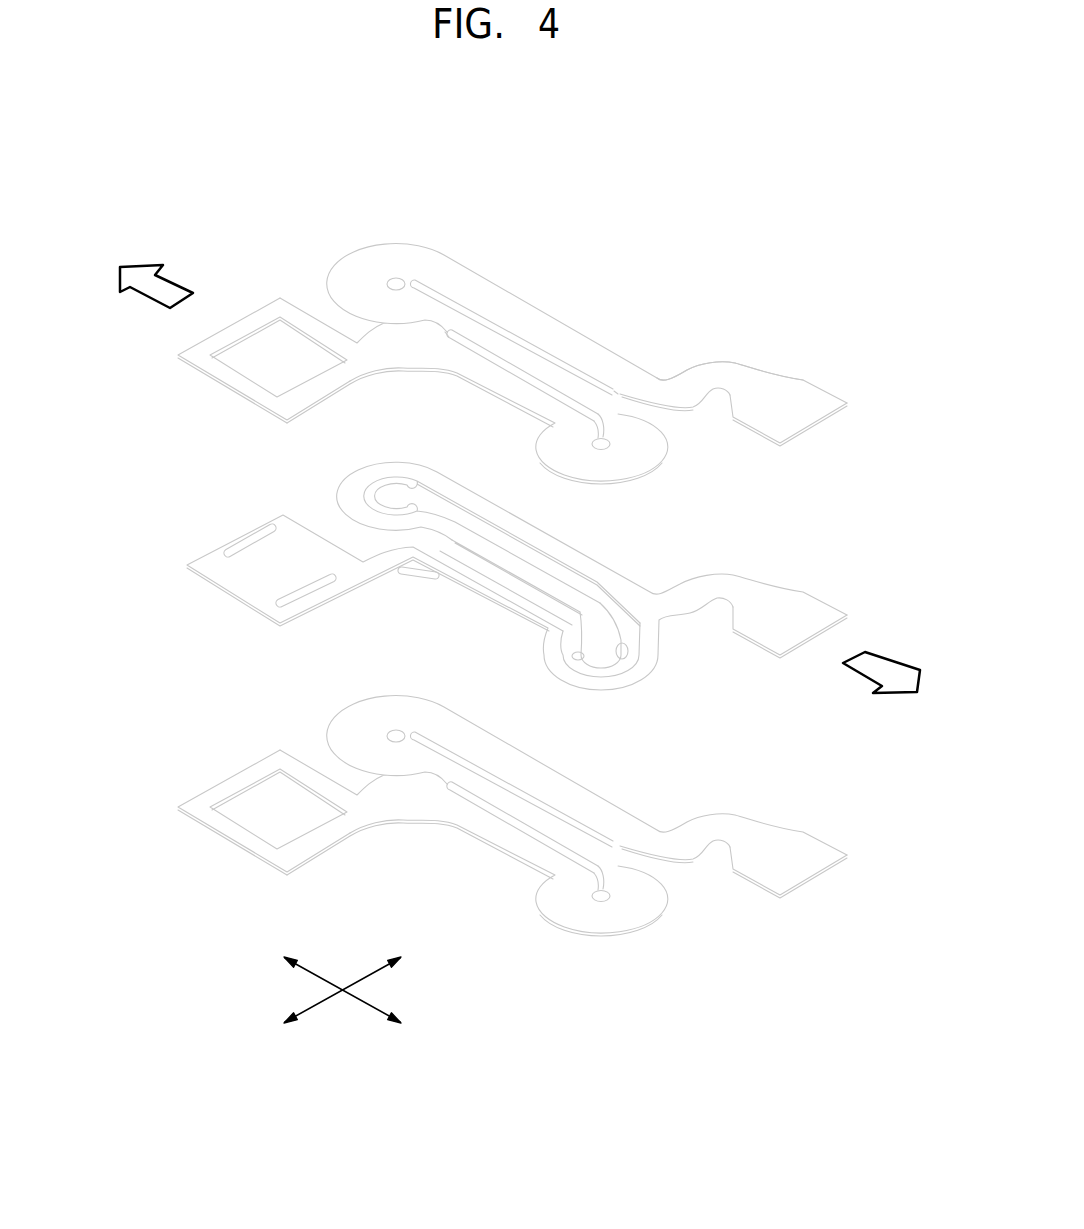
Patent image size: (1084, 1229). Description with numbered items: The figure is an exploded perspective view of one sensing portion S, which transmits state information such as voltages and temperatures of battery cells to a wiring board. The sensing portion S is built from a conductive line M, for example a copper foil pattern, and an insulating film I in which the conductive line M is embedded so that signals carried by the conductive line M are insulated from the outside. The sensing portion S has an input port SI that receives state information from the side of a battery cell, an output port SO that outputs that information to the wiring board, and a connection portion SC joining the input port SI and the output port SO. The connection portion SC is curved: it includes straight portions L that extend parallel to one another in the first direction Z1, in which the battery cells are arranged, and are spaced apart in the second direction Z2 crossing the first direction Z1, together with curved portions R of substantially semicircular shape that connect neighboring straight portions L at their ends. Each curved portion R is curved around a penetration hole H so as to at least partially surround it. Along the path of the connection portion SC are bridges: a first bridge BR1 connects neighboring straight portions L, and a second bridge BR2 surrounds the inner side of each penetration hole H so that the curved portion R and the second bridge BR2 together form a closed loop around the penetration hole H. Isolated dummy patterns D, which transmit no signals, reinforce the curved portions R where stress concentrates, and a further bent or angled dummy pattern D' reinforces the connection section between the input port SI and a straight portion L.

The connection portion SC is at (561, 276).
The input port SI is at (249, 280).
The output port SO is at (797, 342).
The insulating film I is at (807, 398).
The first bridge BR1 is at (447, 335).
The second bridge BR2 is at (408, 287).
The sensing portion S is at (165, 527).
The conductive line M is at (813, 607).
The straight portions L is at (598, 570).
The penetration hole H is at (600, 652).
The dummy patterns D is at (649, 687).
The dummy pattern D' is at (413, 604).
The curved portions R is at (603, 682).
The first direction Z1 is at (358, 1003).
The second direction Z2 is at (358, 979).